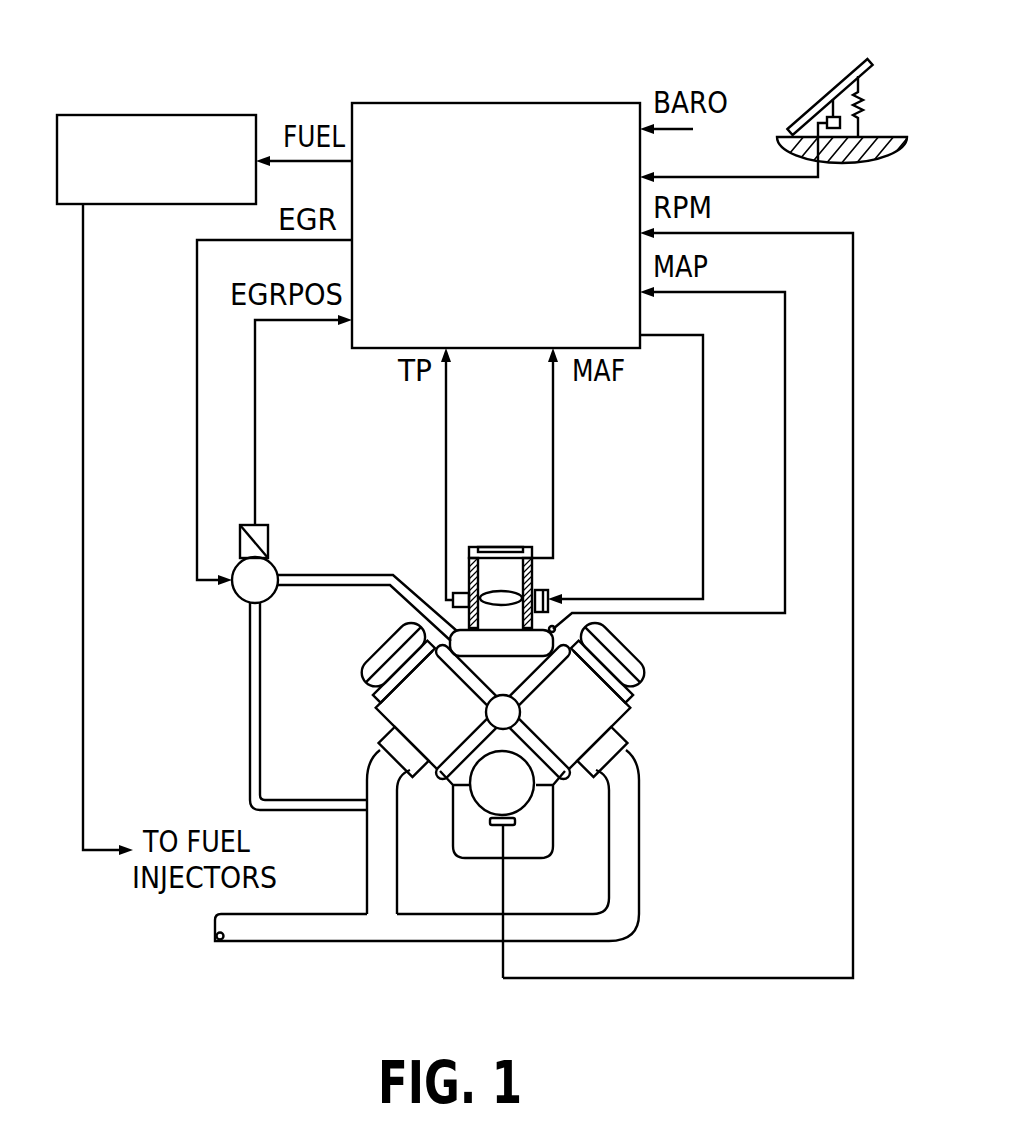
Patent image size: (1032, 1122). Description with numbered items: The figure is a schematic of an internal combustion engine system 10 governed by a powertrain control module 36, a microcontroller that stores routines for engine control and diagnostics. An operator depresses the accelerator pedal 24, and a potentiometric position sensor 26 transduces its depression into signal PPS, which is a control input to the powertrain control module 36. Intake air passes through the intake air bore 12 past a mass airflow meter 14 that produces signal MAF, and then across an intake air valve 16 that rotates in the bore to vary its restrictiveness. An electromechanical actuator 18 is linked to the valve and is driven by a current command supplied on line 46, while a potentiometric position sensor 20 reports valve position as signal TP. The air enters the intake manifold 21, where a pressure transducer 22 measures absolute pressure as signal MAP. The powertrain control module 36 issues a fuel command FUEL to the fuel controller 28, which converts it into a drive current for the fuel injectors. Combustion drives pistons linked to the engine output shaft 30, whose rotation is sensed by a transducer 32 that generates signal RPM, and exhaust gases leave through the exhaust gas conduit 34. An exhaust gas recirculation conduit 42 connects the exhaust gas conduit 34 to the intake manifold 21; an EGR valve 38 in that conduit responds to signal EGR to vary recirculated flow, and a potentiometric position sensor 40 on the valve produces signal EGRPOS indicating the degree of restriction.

The internal combustion engine 10 is at (376, 719).
The intake air bore 12 is at (470, 548).
The mass airflow meter 14 is at (515, 548).
The intake air valve 16 is at (505, 590).
The electromechanical actuator 18 is at (535, 588).
The potentiometric position sensor 20 is at (460, 594).
The intake manifold 21 is at (458, 641).
The pressure transducer 22 is at (556, 624).
The accelerator pedal 24 is at (852, 72).
The potentiometric position sensor 26 is at (828, 118).
The fuel controller 28 is at (156, 114).
The engine output shaft 30 is at (490, 793).
The transducer 32 is at (493, 826).
The exhaust gas conduit 34 is at (387, 893).
The powertrain control module 36 is at (500, 103).
The EGR valve 38 is at (240, 594).
The potentiometric position sensor 40 is at (270, 540).
The exhaust gas recirculation conduit 42 is at (250, 718).
The line 46 is at (676, 335).